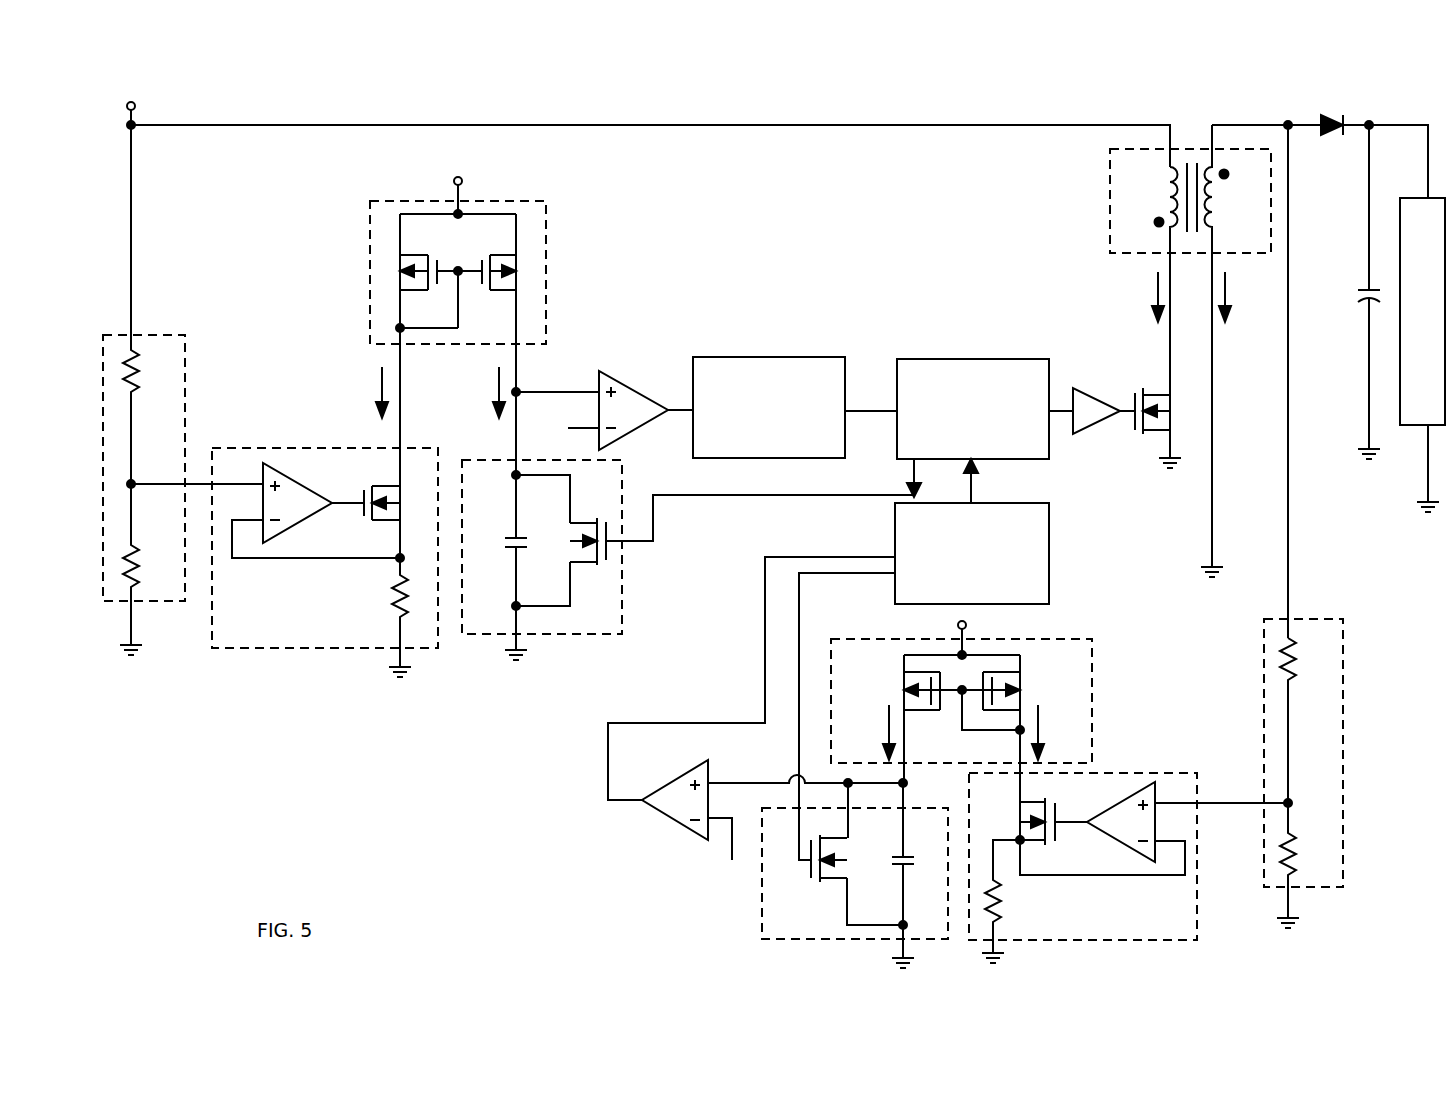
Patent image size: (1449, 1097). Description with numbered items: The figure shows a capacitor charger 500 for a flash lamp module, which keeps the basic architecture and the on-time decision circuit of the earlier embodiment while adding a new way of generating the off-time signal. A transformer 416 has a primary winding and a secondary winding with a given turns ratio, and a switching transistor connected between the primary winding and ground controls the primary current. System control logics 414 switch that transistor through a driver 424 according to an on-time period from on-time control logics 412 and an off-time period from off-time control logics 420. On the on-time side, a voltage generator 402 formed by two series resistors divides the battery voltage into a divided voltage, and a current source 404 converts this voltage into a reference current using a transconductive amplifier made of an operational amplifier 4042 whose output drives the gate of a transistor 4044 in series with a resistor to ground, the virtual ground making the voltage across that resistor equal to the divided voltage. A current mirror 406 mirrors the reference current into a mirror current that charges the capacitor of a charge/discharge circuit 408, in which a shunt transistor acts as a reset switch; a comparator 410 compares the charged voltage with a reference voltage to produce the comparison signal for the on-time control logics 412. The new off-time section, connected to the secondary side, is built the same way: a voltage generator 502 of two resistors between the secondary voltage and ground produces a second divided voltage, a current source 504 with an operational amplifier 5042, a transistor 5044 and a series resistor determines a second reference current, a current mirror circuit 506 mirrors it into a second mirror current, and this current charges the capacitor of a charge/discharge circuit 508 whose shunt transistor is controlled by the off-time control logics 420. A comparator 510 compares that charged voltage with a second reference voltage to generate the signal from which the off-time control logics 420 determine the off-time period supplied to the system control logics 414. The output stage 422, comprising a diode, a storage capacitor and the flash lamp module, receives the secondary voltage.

The capacitor charger 500 is at (263, 812).
The voltage generator 402 is at (140, 333).
The current source 404 is at (252, 447).
The operational amplifier 4042 is at (300, 470).
The transistor 4044 is at (408, 474).
The current mirror 406 is at (546, 243).
The charge/discharge circuit 408 is at (622, 622).
The comparator 410 is at (637, 381).
The on-time control logics 412 is at (772, 357).
The system control logics 414 is at (965, 359).
The transformer 416 is at (1110, 205).
The off-time control logics 420 is at (1049, 553).
The output stage with diode, capacitor and flash lamp module 422 is at (1400, 370).
The driver 424 is at (1093, 390).
The voltage generator 502 is at (1343, 718).
The current source 504 is at (1197, 826).
The operational amplifier 5042 is at (1120, 795).
The transistor 5044 is at (1070, 853).
The current mirror circuit 506 is at (1092, 690).
The charge/discharge circuit 508 is at (762, 910).
The comparator 510 is at (648, 818).